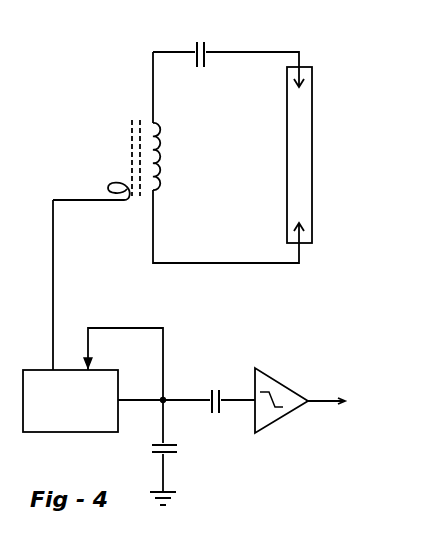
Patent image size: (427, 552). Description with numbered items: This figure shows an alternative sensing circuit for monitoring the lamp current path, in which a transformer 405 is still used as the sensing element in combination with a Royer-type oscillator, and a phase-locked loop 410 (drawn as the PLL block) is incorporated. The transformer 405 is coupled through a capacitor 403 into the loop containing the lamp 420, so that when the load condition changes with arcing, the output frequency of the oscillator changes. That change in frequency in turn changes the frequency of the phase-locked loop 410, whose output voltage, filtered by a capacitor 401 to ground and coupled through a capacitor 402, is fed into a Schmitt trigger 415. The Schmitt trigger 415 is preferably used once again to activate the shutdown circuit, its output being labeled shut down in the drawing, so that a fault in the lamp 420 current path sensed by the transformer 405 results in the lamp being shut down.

The capacitor 401 is at (185, 452).
The capacitor 402 is at (211, 387).
The capacitor 403 is at (216, 42).
The transformer 405 is at (106, 160).
The PLL 410 is at (139, 393).
The amplifier / shut down output 415 is at (306, 405).
The lamp / load 420 is at (328, 155).